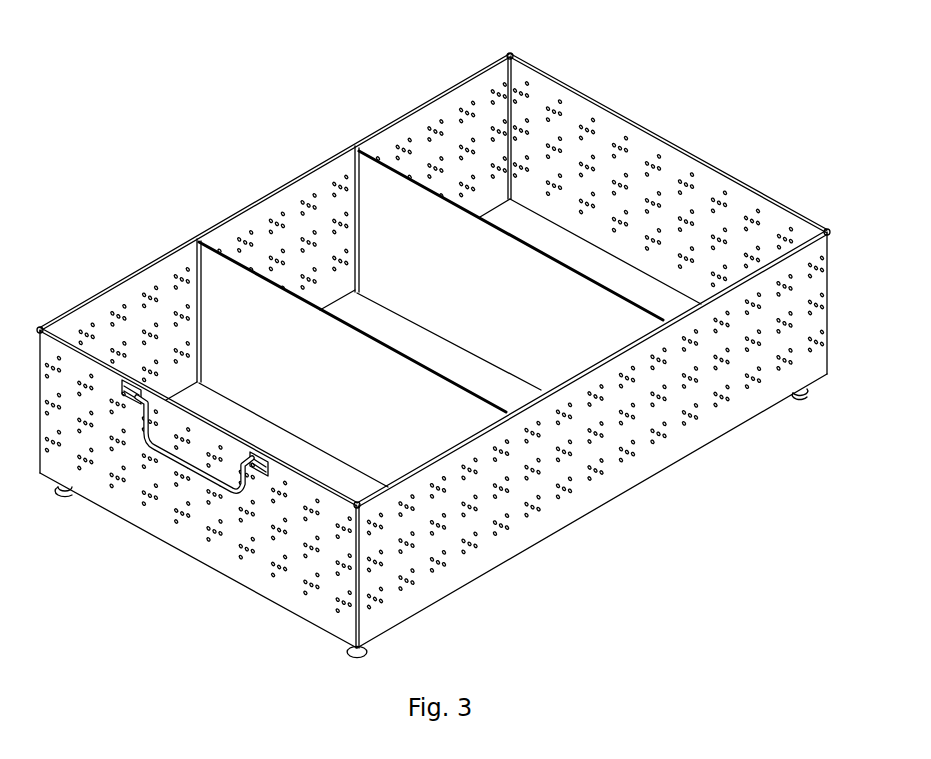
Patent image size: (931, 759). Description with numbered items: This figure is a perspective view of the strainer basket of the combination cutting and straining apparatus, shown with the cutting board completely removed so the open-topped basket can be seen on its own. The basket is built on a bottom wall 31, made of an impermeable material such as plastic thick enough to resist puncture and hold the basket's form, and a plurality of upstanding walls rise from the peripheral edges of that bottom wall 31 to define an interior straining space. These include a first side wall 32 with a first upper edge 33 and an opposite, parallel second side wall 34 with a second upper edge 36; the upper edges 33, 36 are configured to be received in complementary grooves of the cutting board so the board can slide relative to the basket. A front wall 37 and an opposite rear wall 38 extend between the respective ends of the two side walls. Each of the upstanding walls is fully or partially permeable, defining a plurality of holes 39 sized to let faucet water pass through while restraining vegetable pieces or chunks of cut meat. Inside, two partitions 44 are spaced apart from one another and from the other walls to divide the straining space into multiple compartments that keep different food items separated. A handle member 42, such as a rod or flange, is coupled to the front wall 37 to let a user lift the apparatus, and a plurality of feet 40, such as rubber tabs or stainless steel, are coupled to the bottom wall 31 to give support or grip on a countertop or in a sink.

The bottom wall 31 is at (541, 232).
The first side wall 32 is at (590, 452).
The first upper edge 33 is at (481, 433).
The second side wall 34 is at (258, 218).
The second upper edge 36 is at (294, 182).
The front wall 37 is at (267, 580).
The rear wall 38 is at (634, 150).
The holes 39 is at (657, 440).
The feet 40 is at (357, 658).
The handle member 42 is at (167, 458).
The partitions 44 is at (213, 285).